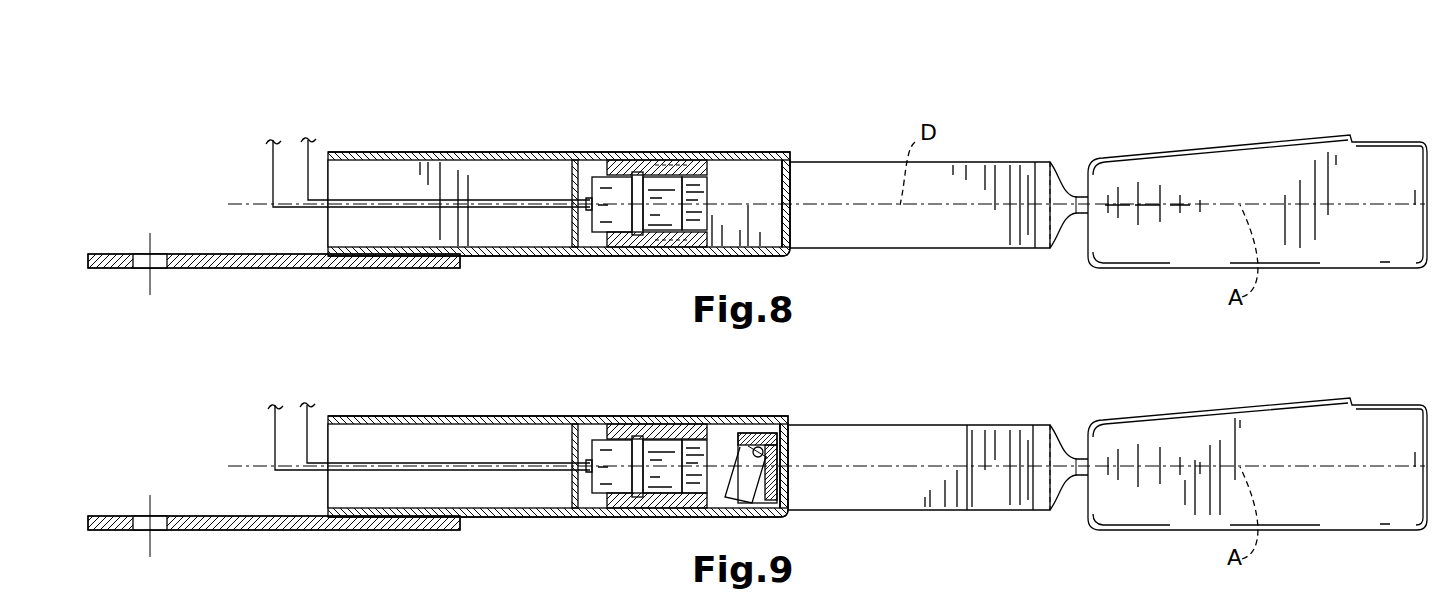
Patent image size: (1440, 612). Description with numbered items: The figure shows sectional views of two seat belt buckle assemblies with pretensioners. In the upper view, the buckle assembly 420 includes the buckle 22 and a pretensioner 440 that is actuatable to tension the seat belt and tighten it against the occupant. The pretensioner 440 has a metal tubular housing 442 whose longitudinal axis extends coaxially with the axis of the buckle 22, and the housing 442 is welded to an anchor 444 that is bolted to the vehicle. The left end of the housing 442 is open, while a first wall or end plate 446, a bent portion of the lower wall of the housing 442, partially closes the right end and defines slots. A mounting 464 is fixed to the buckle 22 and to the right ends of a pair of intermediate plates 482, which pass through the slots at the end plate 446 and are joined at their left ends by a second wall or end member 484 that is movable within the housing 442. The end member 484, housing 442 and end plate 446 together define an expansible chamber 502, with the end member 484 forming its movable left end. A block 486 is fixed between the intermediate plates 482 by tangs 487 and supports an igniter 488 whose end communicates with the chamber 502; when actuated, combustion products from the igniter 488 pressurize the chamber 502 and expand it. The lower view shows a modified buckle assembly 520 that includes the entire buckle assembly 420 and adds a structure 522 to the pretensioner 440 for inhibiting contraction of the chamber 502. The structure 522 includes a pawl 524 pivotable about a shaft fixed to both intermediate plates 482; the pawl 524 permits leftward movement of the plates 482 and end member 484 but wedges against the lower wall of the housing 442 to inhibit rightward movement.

In FIG. 8, the buckle 22 is at (1243, 128).
In FIG. 9, the buckle 22 is at (1243, 390).
In FIG. 8, the buckle assembly 420 is at (1082, 134).
In FIG. 8, the pretensioner 440 is at (794, 144).
In FIG. 9, the pretensioner 440 is at (664, 408).
In FIG. 8, the tubular housing 442 is at (407, 152).
In FIG. 9, the tubular housing 442 is at (520, 416).
In FIG. 8, the anchor 444 is at (113, 254).
In FIG. 9, the anchor 444 is at (111, 516).
In FIG. 8, the end plate 446 is at (790, 196).
In FIG. 8, the mounting 464 is at (1068, 215).
In FIG. 9, the mounting 464 is at (1068, 477).
In FIG. 8, the intermediate plates 482 is at (988, 166).
In FIG. 9, the intermediate plates 482 is at (988, 427).
In FIG. 8, the end member 484 is at (571, 192).
In FIG. 9, the end member 484 is at (572, 481).
In FIG. 8, the block 486 is at (655, 172).
In FIG. 9, the block 486 is at (660, 499).
In FIG. 8, the tangs 487 is at (678, 165).
In FIG. 8, the igniter 488 is at (615, 190).
In FIG. 9, the igniter 488 is at (615, 452).
In FIG. 8, the expansible chamber 502 is at (766, 197).
In FIG. 9, the expansible chamber 502 is at (718, 446).
In FIG. 9, the buckle assembly 520 is at (1082, 396).
In FIG. 9, the structure 522 is at (777, 424).
In FIG. 9, the pawl 524 is at (748, 500).